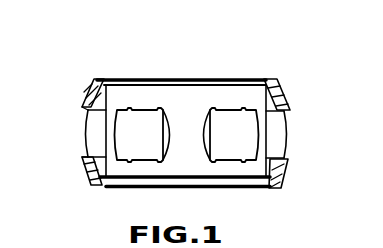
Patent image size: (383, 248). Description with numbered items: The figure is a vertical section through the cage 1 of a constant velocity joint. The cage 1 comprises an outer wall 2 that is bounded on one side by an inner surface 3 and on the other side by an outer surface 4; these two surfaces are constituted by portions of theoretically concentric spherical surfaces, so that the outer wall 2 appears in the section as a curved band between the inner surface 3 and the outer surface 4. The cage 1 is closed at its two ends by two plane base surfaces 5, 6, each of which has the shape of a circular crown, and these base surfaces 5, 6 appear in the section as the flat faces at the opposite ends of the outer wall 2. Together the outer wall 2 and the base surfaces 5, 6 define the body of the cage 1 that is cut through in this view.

The cage 1 is at (66, 88).
The outer wall 2 is at (83, 174).
The inner surface 3 is at (263, 96).
The outer surface 4 is at (283, 100).
The plane base surface 5 is at (127, 189).
The plane base surface 6 is at (135, 78).